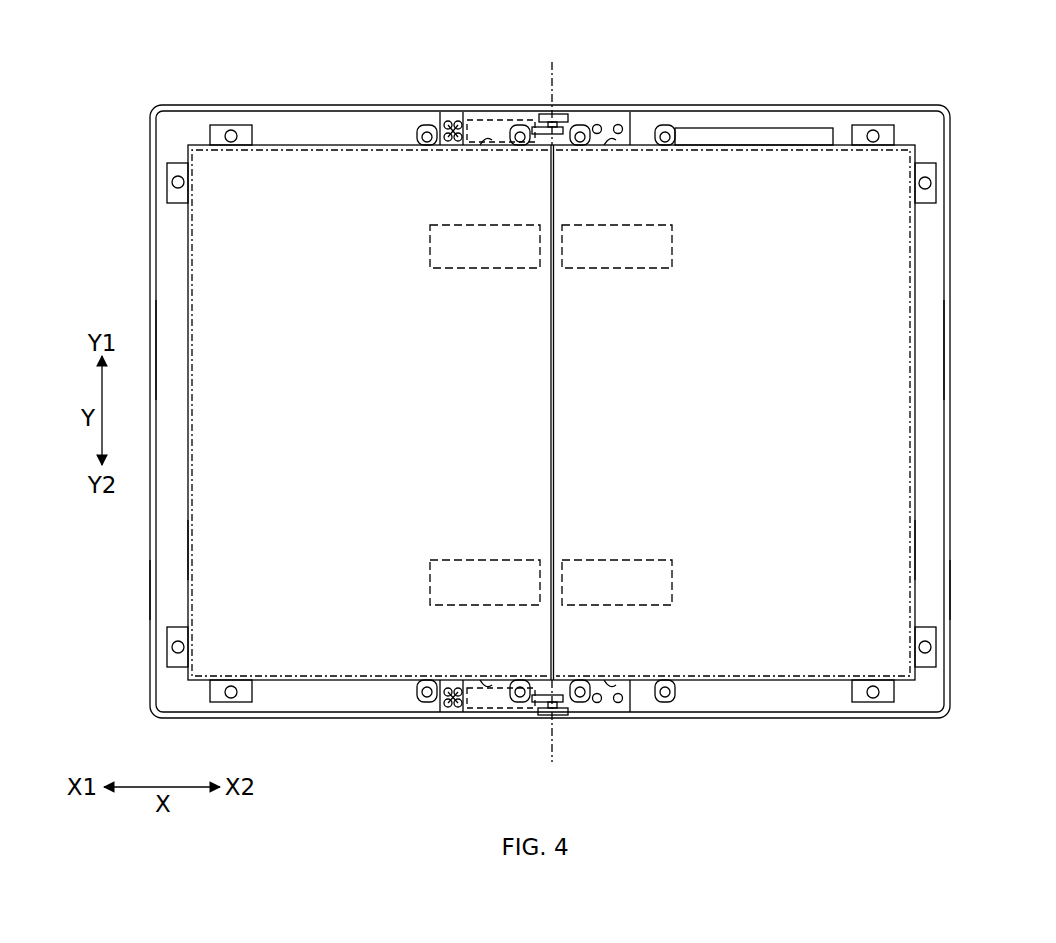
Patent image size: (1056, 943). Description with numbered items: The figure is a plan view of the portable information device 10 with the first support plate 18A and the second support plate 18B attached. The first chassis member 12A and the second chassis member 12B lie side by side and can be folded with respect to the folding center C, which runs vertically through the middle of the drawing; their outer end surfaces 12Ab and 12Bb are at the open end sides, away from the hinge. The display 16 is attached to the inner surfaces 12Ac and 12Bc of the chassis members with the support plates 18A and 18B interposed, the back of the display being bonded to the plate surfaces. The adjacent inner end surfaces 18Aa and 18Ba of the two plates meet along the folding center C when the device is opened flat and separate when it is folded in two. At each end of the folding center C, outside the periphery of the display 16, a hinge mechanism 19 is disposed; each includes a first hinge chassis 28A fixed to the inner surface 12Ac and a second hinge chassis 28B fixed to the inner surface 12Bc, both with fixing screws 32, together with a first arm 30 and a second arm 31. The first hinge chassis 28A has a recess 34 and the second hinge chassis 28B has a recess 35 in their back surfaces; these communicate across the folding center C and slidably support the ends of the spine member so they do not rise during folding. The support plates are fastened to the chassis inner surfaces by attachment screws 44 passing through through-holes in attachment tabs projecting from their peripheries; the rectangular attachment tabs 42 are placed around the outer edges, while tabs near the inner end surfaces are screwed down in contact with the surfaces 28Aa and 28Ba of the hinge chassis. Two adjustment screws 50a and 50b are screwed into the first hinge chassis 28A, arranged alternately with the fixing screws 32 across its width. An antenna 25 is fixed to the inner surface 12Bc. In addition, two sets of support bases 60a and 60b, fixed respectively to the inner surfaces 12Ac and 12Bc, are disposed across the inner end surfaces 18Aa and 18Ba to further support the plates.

The portable information device 10 is at (75, 63).
The first chassis member 12A is at (204, 721).
The second chassis member 12B is at (915, 722).
The outer end surface of first chassis member 12Ab is at (152, 590).
The inner surface of first chassis member 12Ac is at (175, 546).
The outer end surface of second chassis member 12Bb is at (950, 590).
The inner surface of second chassis member 12Bc is at (935, 548).
The display 16 is at (915, 455).
The first support plate 18A is at (218, 238).
The second support plate 18B is at (870, 238).
The inner end surface of first support plate 18Aa is at (555, 412).
The inner end surface of second support plate 18Ba is at (550, 416).
The hinge mechanism 19 is at (486, 122).
The antenna 25 is at (756, 128).
The first hinge chassis 28A is at (460, 124).
The second hinge chassis 28B is at (585, 126).
The surface of first hinge chassis 28Aa is at (487, 145).
The surface of second hinge chassis 28Ba is at (613, 145).
The first arm 30 is at (541, 114).
The second arm 31 is at (560, 127).
The fixing screw 32 is at (452, 128).
The recess 34 is at (495, 132).
The recess 35 is at (597, 124).
The attachment tab 42 is at (255, 126).
The attachment screw 44 is at (231, 129).
The adjustment screw 50a is at (446, 122).
The adjustment screw 50b is at (455, 142).
The first support base 60a is at (485, 268).
The second support base 60b is at (612, 268).
The folding center C is at (551, 413).